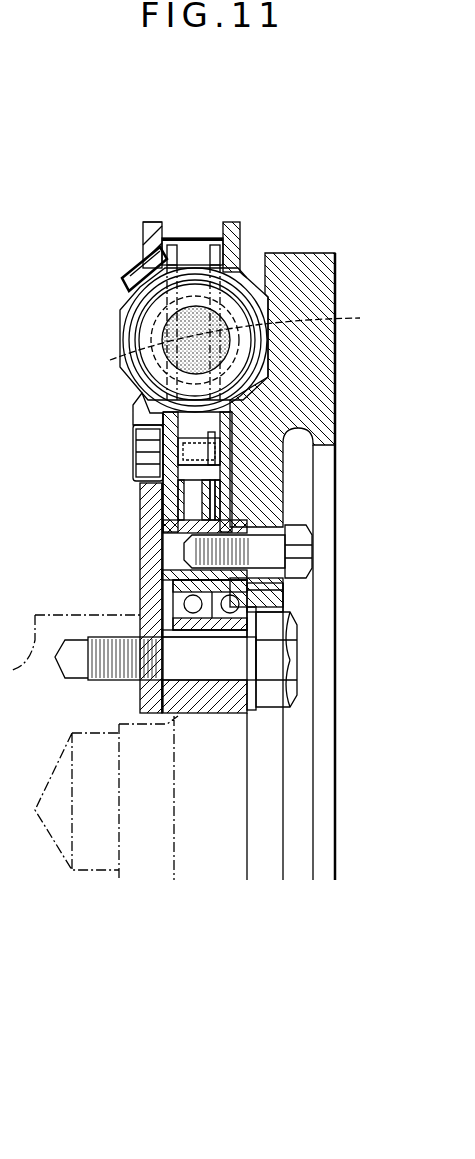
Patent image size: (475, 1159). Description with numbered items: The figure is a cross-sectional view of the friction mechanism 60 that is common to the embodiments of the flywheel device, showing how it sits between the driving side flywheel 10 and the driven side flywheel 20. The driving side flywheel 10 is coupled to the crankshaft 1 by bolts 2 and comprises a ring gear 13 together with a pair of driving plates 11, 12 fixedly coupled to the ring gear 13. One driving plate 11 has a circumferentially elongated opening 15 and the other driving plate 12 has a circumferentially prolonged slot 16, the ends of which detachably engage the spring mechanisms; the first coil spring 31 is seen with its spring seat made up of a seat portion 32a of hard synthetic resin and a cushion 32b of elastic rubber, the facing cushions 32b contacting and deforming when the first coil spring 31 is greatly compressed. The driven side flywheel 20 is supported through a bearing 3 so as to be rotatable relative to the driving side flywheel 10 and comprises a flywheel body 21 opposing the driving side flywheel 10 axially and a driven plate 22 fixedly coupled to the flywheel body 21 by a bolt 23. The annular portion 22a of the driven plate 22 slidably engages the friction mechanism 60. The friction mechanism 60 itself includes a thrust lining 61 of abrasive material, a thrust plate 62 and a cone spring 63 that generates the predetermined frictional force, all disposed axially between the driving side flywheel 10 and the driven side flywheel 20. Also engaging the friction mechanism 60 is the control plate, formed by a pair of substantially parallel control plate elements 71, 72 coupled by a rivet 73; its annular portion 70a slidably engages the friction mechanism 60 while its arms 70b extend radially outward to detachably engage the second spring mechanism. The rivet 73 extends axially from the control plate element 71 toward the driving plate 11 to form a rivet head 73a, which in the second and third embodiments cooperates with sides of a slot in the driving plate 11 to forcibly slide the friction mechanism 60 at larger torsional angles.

The crankshaft 1 is at (129, 747).
The bolt 2 is at (283, 657).
The bearing 3 is at (238, 601).
The driving side flywheel 10 is at (150, 214).
The driving plate 11 is at (143, 236).
The driving plate 12 is at (233, 265).
The ring gear 13 is at (195, 232).
The elongated opening 15 is at (138, 262).
The elongated slot 16 is at (245, 278).
The driven side flywheel 20 is at (318, 230).
The flywheel body 21 is at (305, 372).
The driven plate 22 is at (150, 562).
The annular portion 22a is at (172, 525).
The bolt 23 is at (302, 548).
The first coil spring 31 is at (118, 325).
The seat portion 32a is at (125, 288).
The cushion 32b is at (140, 342).
The friction mechanism 60 is at (176, 489).
The thrust lining 61 is at (176, 492).
The thrust plate 62 is at (215, 483).
The cone spring 63 is at (218, 488).
The annular portion 70a is at (235, 423).
The arm 70b is at (128, 360).
The control plate element 71 is at (172, 245).
The control plate element 72 is at (215, 242).
The rivet 73 is at (134, 440).
The rivet head 73a is at (135, 412).